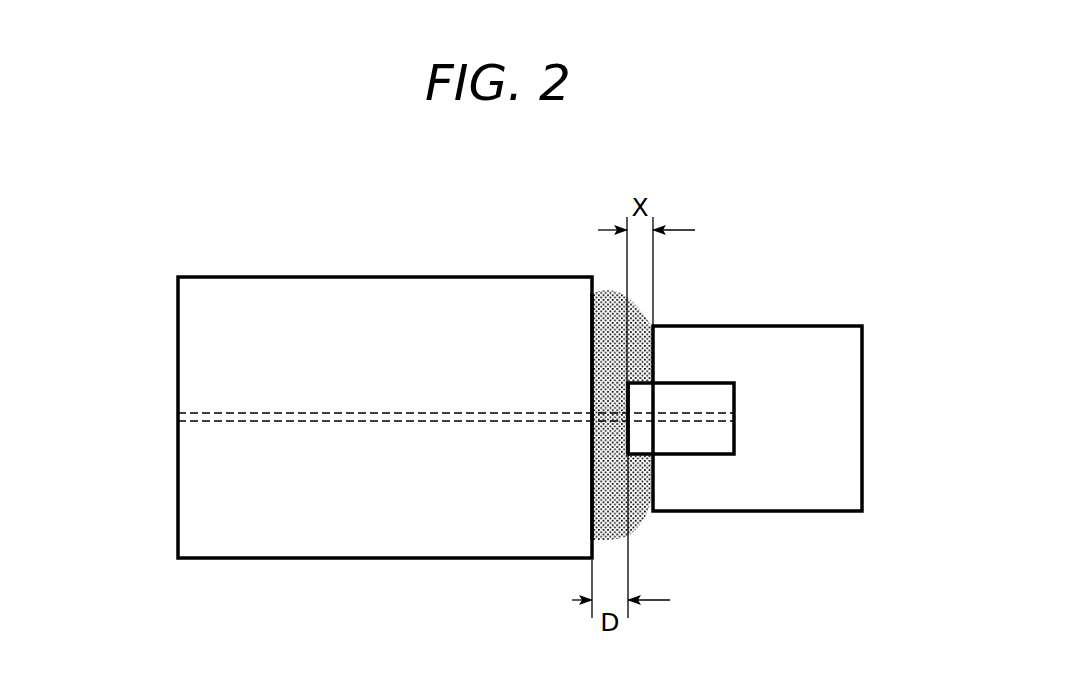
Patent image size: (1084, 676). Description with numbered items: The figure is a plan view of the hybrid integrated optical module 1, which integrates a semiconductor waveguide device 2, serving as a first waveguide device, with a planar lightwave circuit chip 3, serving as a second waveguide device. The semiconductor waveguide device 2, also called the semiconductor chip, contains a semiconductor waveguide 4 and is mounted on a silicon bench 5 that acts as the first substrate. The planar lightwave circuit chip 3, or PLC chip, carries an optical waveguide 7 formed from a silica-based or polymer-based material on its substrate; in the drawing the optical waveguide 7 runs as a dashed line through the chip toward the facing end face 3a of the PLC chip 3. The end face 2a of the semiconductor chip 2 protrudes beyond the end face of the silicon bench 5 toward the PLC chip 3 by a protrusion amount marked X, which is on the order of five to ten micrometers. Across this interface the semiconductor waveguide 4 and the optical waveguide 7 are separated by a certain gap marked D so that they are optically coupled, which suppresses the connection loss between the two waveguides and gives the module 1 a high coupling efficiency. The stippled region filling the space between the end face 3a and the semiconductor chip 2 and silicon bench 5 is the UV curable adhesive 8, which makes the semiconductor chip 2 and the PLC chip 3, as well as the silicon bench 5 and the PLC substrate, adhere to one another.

The hybrid integrated optical module 1 is at (457, 245).
The semiconductor waveguide device 2 is at (718, 380).
The end face of the semiconductor chip 2a is at (620, 397).
The planar lightwave circuit chip 3 is at (310, 275).
The end face of the PLC chip 3a is at (595, 465).
The semiconductor waveguide 4 is at (687, 422).
The Si bench 5 is at (833, 493).
The optical waveguide 7 is at (225, 413).
The UV curable adhesive 8 is at (612, 292).